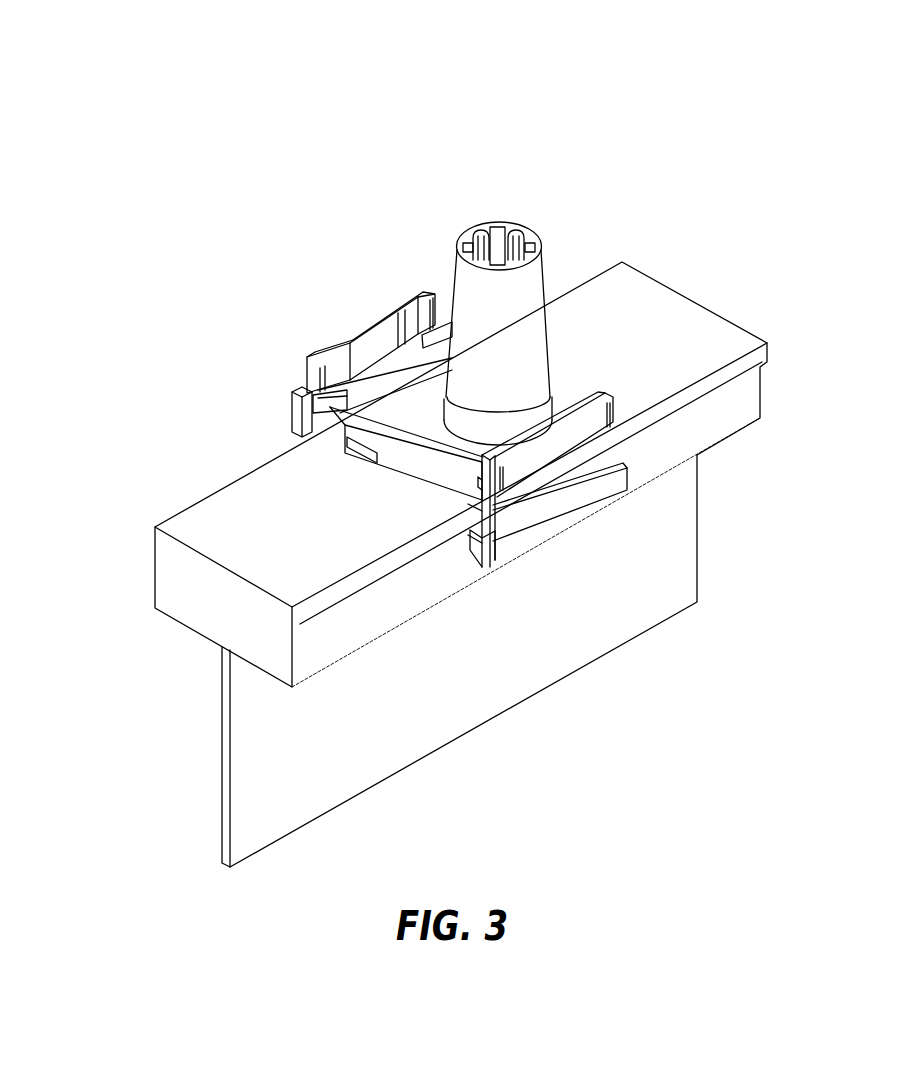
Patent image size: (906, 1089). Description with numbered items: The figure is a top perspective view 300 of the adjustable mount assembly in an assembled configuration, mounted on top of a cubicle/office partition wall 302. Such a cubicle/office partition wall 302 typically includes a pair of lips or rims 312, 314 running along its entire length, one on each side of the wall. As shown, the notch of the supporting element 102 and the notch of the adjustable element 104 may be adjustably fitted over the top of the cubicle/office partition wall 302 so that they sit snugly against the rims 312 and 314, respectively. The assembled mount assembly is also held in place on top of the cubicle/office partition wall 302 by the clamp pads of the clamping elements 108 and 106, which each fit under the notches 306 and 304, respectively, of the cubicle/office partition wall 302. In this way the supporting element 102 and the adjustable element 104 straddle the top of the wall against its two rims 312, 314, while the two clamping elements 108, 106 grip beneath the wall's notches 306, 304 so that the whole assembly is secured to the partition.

The top perspective view 300 is at (276, 148).
The supporting element 102 is at (550, 387).
The adjustable element 104 is at (417, 357).
The clamping element 106 is at (596, 413).
The clamping element 108 is at (400, 315).
The cubicle/office partition wall 302 is at (278, 516).
The notch 304 is at (152, 543).
The notch 306 is at (293, 626).
The lip or rim 312 is at (380, 571).
The lip or rim 314 is at (151, 533).